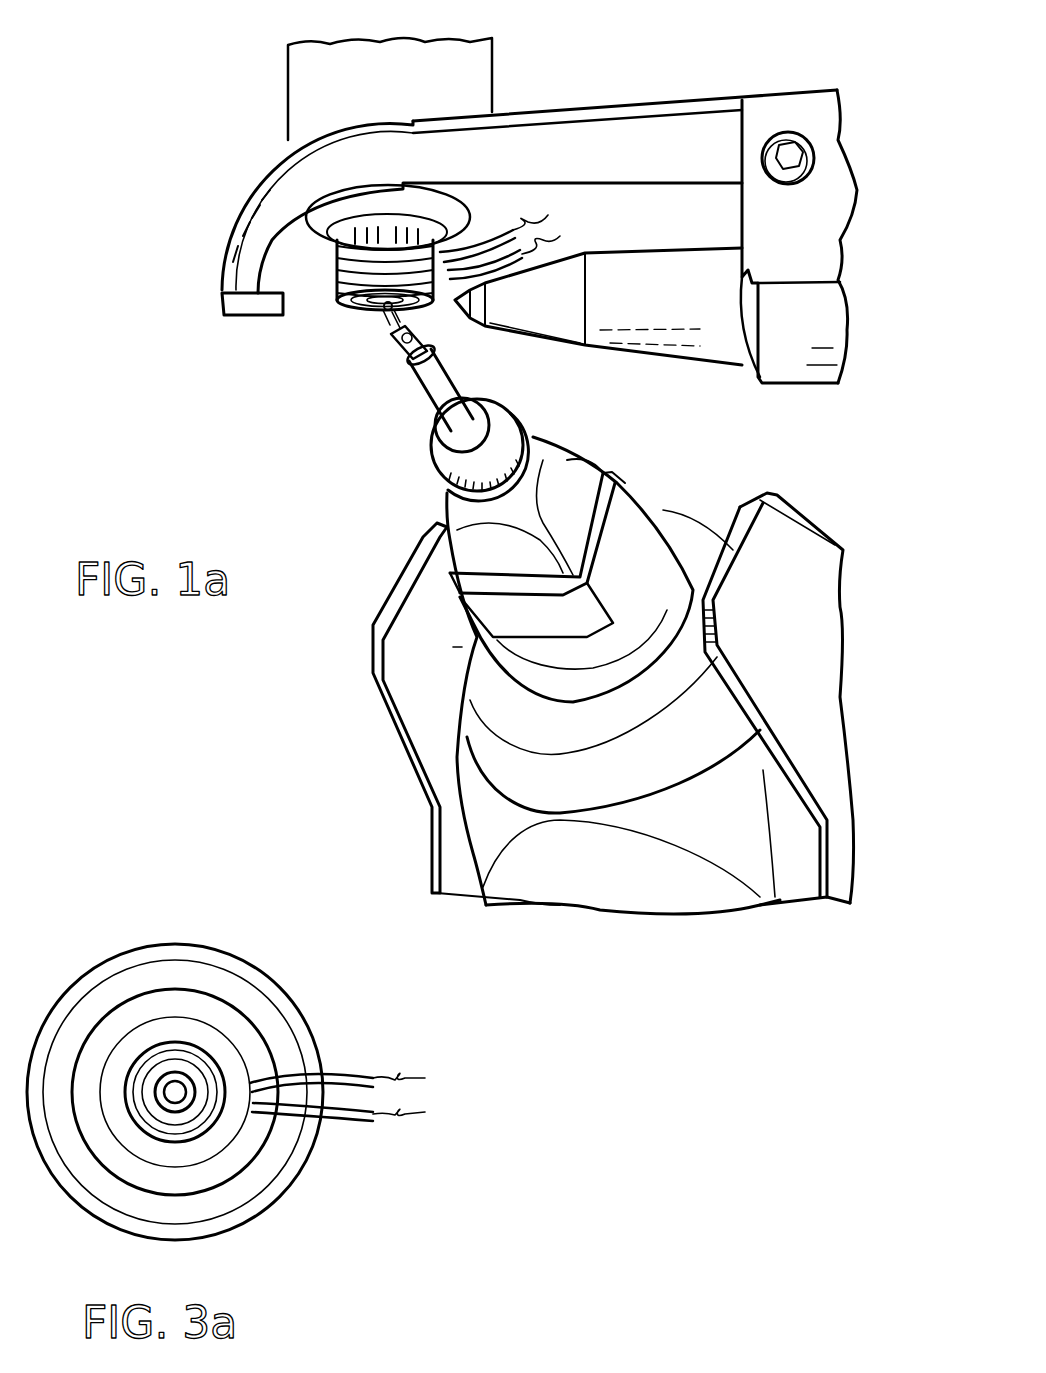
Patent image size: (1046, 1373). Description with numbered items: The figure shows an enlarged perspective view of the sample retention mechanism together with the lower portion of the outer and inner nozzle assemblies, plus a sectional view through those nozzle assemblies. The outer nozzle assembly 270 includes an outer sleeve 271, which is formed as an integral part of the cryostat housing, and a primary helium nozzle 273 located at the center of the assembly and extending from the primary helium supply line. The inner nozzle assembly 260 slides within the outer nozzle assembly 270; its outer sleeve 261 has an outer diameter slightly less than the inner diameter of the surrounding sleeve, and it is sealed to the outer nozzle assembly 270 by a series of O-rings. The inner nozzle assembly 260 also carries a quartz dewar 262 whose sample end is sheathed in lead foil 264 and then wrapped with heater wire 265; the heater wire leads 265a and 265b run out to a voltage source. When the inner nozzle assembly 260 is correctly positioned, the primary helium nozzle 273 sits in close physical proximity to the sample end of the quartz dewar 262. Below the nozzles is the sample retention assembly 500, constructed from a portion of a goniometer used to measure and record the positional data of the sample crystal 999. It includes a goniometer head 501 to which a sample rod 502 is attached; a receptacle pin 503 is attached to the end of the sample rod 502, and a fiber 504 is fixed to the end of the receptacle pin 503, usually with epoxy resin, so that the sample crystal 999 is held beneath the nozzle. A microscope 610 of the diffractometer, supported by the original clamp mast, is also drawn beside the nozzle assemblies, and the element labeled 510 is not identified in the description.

In FIG. 1a, the outer nozzle assembly 270 is at (272, 70).
In FIG. 1a, the outer sleeve 271 is at (404, 90).
In FIG. 3a, the outer sleeve 271 is at (192, 945).
In FIG. 1a, the inner nozzle assembly 260 is at (282, 241).
In FIG. 3a, the outer sleeve 261 is at (217, 982).
In FIG. 1a, the quartz dewar 262 is at (355, 222).
In FIG. 3a, the quartz dewar 262 is at (207, 1052).
In FIG. 3a, the lead foil 264 is at (223, 1132).
In FIG. 1a, the heater wire 265 is at (345, 296).
In FIG. 1a, the heater wire lead 265a is at (500, 228).
In FIG. 3a, the heater wire lead 265a is at (355, 1078).
In FIG. 1a, the heater wire lead 265b is at (532, 262).
In FIG. 3a, the heater wire lead 265b is at (350, 1118).
In FIG. 1a, the primary helium nozzle 273 is at (347, 310).
In FIG. 3a, the primary helium nozzle 273 is at (168, 1082).
In FIG. 1a, the sample crystal 999 is at (387, 312).
In FIG. 1a, the receptacle pin 503 is at (405, 345).
In FIG. 1a, the fiber 504 is at (392, 312).
In FIG. 1a, the sample rod 502 is at (455, 382).
In FIG. 1a, the goniometer head 501 is at (648, 503).
In FIG. 1a, the sample retention assembly 500 is at (860, 628).
In FIG. 1a, the mounting bracket 510 is at (790, 90).
In FIG. 1a, the microscope 610 is at (673, 333).